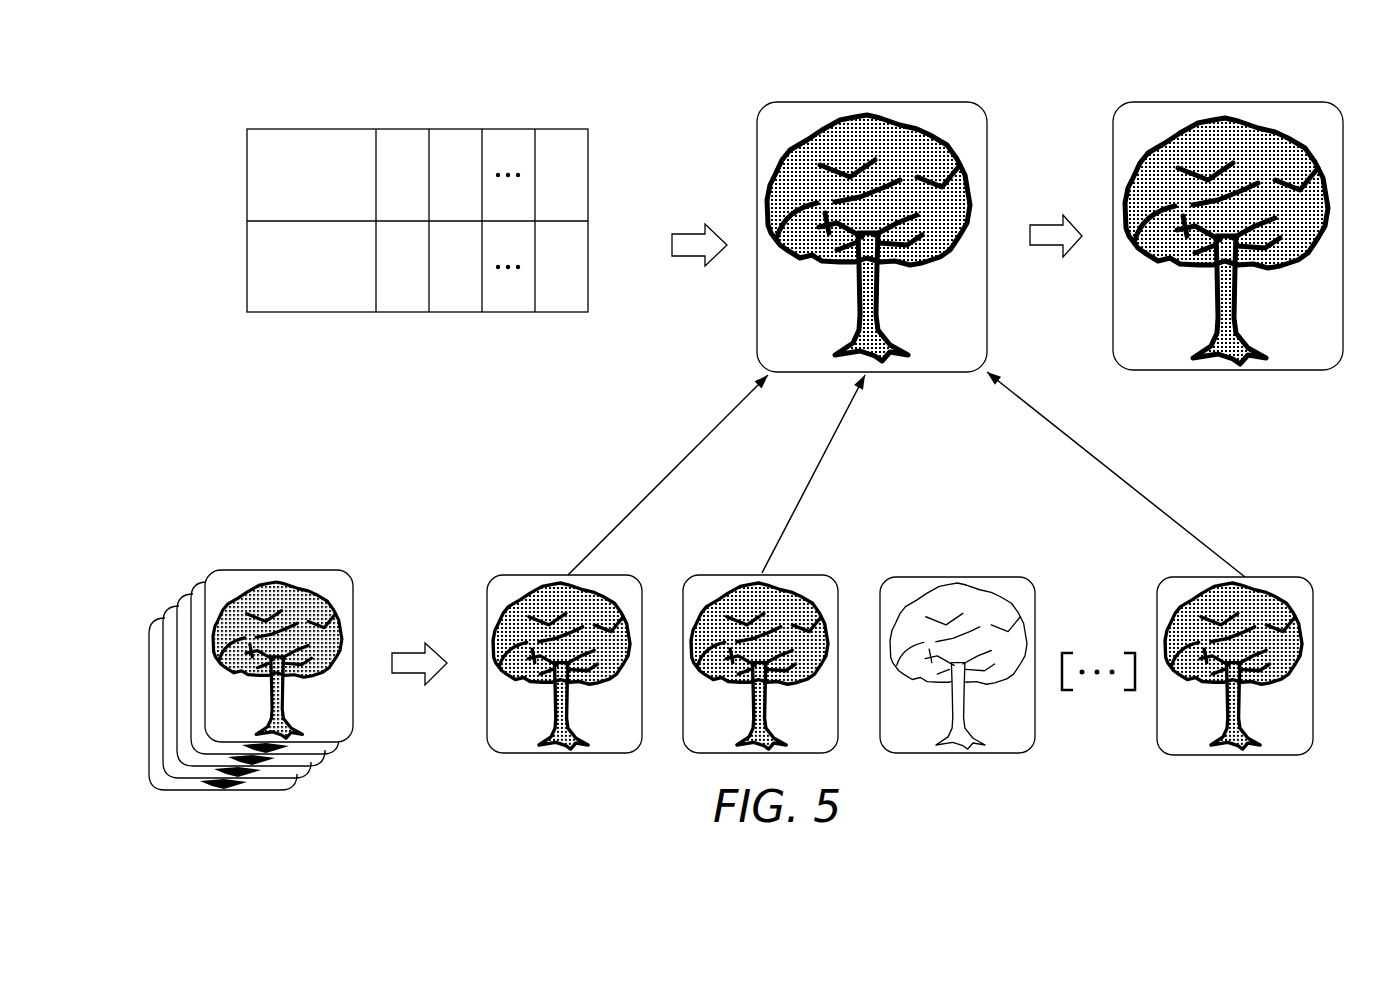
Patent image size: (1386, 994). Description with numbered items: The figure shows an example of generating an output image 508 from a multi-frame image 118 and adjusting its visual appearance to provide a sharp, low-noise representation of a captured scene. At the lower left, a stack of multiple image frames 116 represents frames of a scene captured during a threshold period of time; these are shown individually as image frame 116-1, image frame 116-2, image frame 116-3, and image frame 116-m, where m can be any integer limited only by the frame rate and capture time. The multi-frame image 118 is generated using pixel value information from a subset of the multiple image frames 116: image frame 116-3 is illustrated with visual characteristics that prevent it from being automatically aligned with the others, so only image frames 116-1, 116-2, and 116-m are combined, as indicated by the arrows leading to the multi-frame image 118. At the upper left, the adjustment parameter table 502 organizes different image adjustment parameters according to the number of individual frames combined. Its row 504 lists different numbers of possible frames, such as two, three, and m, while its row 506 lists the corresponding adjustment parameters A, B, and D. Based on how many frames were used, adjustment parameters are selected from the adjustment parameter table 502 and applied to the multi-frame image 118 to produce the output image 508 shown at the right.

The adjustment parameter table 502 is at (589, 128).
The row 504 is at (247, 180).
The row 506 is at (247, 262).
The multi-frame image 118 is at (932, 102).
The output image 508 is at (1230, 102).
The multiple image frames 116 is at (313, 570).
The image frame 116-1 is at (598, 575).
The image frame 116-2 is at (791, 575).
The image frame 116-3 is at (988, 577).
The image frame 116-m is at (1251, 577).